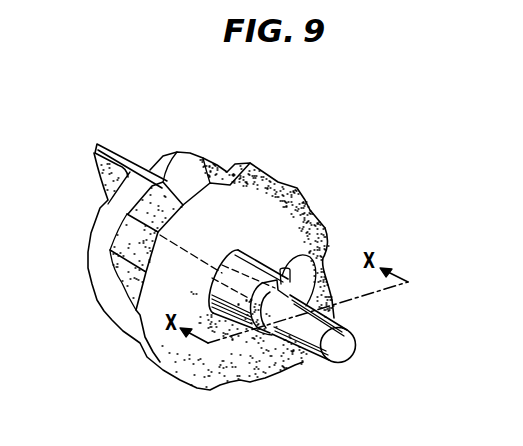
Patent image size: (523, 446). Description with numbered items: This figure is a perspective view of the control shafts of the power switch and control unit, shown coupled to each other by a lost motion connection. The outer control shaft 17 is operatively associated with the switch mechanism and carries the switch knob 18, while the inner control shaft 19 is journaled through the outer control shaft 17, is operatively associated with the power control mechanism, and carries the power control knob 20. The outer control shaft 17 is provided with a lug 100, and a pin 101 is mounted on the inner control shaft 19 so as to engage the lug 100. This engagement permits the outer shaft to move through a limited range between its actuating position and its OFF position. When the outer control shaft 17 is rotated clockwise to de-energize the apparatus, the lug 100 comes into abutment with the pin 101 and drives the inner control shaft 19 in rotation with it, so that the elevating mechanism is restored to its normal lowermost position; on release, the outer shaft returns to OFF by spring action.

The switch knob 18 is at (278, 182).
The power control knob 20 is at (113, 142).
The outer control shaft 17 is at (250, 254).
The inner control shaft 19 is at (350, 342).
The lug 100 is at (266, 334).
The pin 101 is at (324, 226).